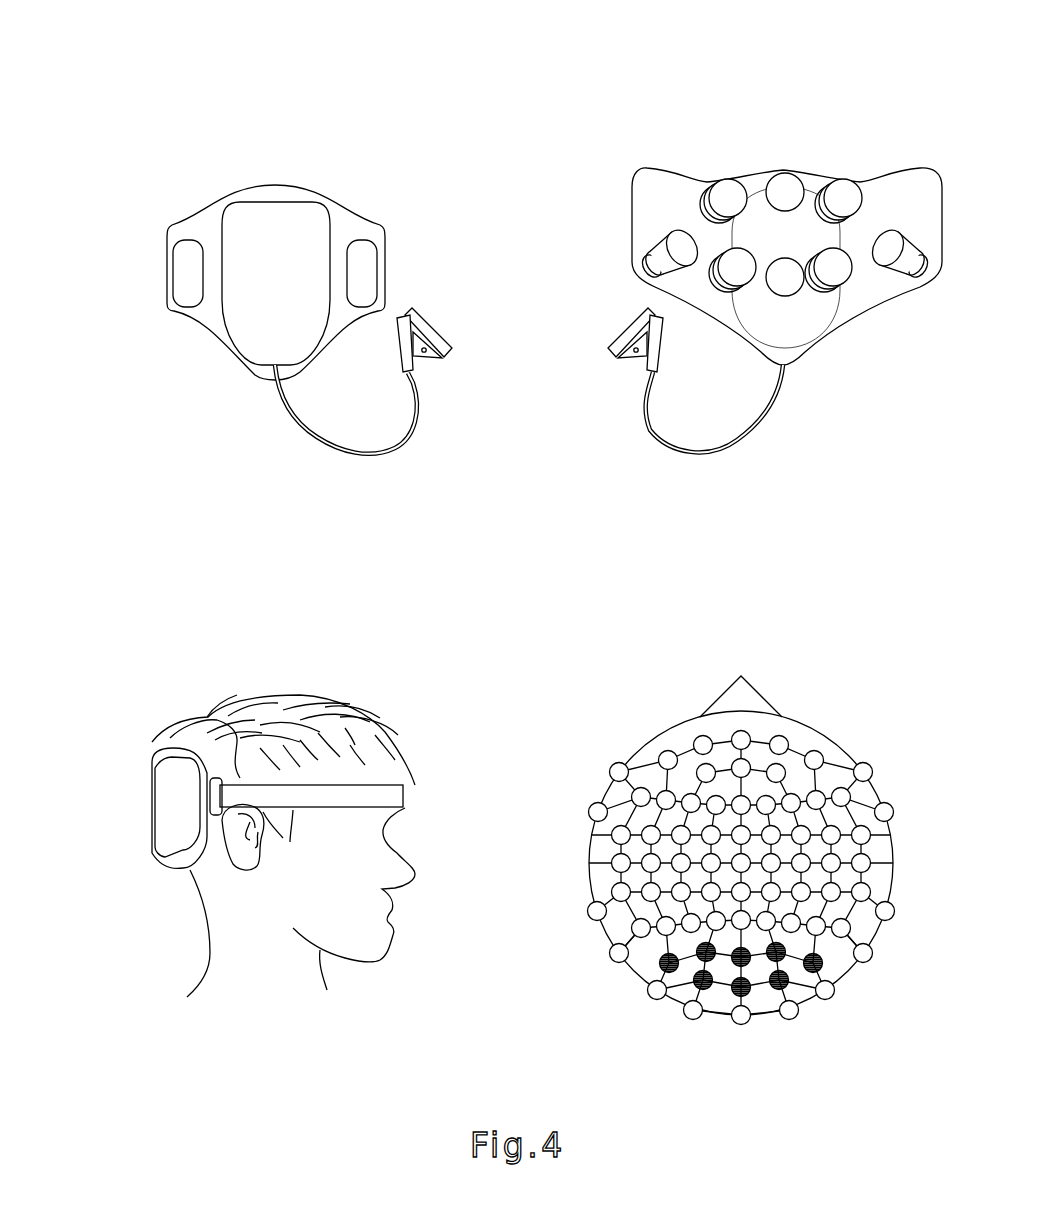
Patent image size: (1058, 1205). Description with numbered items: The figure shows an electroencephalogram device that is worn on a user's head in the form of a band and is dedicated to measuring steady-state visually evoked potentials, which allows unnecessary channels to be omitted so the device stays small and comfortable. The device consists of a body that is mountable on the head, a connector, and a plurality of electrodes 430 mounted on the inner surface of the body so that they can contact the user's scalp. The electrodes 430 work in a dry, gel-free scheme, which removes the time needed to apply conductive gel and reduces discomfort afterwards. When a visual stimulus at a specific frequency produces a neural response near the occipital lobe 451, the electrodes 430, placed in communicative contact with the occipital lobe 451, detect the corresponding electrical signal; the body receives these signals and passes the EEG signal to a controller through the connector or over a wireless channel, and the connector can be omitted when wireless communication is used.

The plurality of electrodes 430 is at (730, 195).
The occipital lobe 451 is at (739, 996).